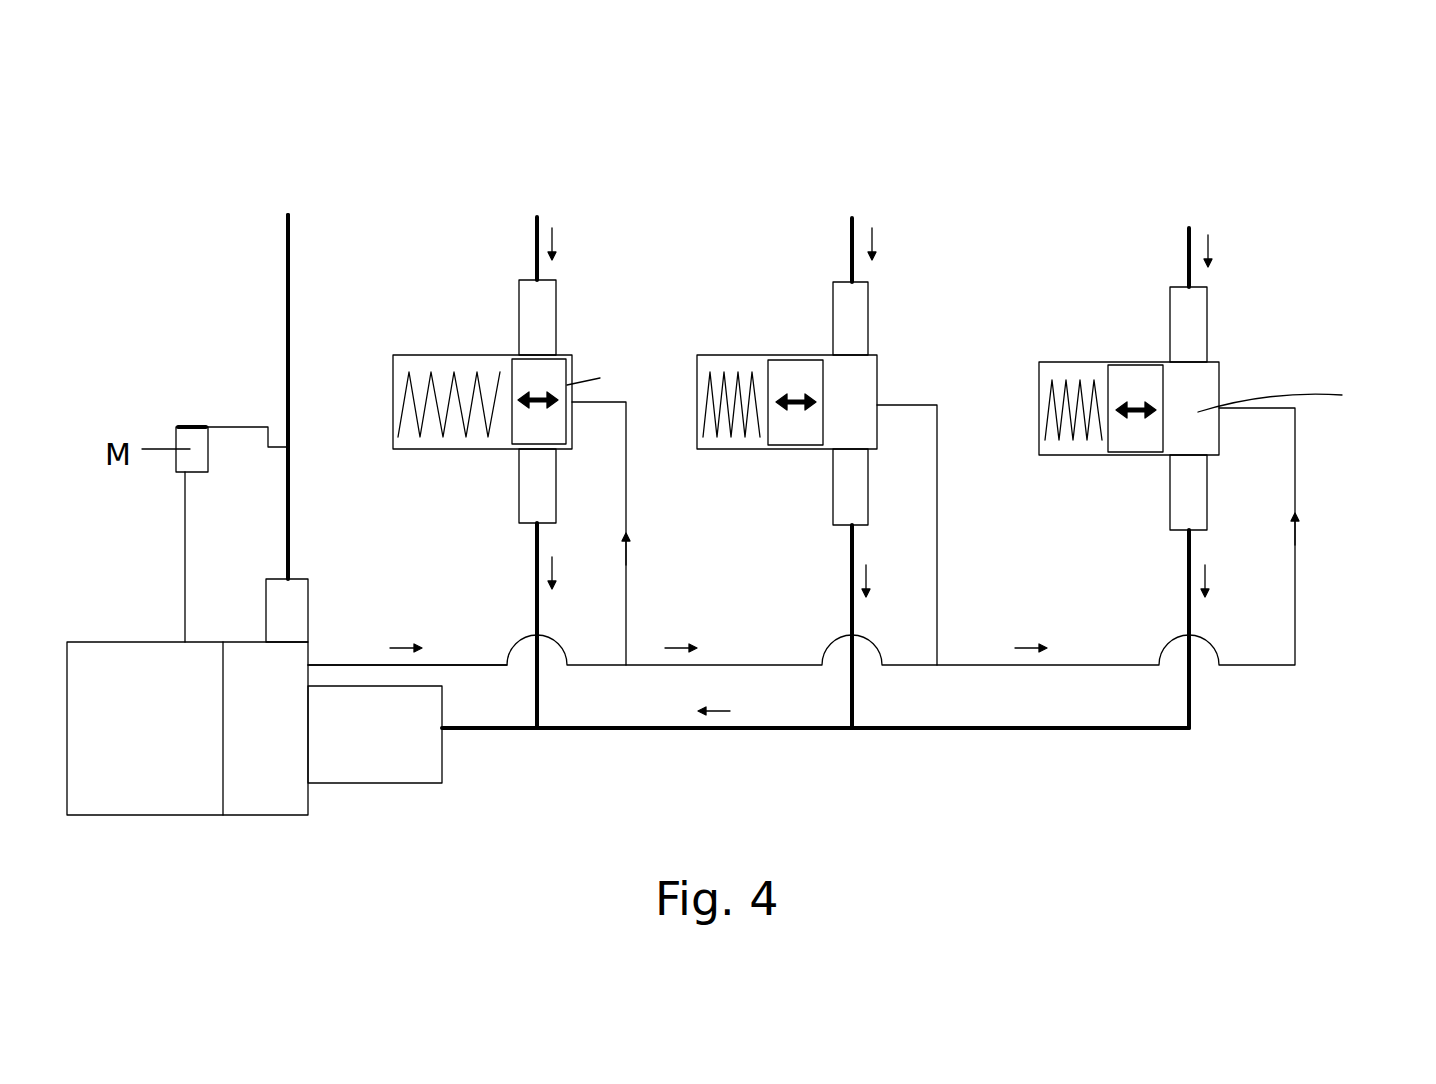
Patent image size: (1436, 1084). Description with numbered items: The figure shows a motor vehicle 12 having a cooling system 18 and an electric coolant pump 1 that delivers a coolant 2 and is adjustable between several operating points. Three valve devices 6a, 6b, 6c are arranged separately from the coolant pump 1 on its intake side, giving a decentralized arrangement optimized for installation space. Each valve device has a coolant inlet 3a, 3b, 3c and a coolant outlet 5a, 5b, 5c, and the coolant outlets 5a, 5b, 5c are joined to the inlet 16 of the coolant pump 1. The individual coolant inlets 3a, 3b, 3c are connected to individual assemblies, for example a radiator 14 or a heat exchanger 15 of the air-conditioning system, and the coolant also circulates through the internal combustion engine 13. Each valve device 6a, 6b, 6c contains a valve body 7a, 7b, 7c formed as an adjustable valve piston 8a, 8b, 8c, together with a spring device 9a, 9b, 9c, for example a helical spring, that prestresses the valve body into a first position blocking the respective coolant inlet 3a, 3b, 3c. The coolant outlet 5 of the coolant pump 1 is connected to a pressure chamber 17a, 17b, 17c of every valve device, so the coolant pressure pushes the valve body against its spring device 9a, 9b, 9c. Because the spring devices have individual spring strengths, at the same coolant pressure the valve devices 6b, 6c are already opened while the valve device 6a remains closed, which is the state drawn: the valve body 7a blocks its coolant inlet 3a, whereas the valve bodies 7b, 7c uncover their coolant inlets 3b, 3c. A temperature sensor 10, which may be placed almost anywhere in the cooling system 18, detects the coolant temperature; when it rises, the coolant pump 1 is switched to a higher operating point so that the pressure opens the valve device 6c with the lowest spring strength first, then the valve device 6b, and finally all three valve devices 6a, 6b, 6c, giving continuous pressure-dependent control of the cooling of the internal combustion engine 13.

The coolant pump 1 is at (158, 752).
The coolant 2 is at (305, 418).
The coolant inlet 3a is at (537, 268).
The coolant inlet 3b is at (850, 272).
The coolant inlet 3c is at (1180, 280).
The coolant outlet 5 is at (312, 657).
The coolant outlet 5a is at (532, 538).
The coolant outlet 5b is at (842, 530).
The coolant outlet 5c is at (1180, 540).
The valve device 6a is at (490, 322).
The valve device 6b is at (808, 324).
The valve device 6c is at (1135, 330).
The valve body 7a is at (542, 378).
The valve body 7b is at (790, 430).
The valve body 7c is at (1127, 438).
The valve piston 8a is at (612, 317).
The valve piston 8b is at (797, 454).
The valve piston 8c is at (1139, 459).
The spring device 9a is at (425, 385).
The spring device 9b is at (717, 423).
The spring device 9c is at (1065, 430).
The temperature sensor 10 is at (282, 420).
The motor vehicle 12 is at (325, 113).
The internal combustion engine 13 is at (1240, 216).
The radiator 14 is at (915, 162).
The heat exchanger 15 is at (1320, 211).
The inlet 16 is at (452, 748).
The pressure chamber 17a is at (567, 362).
The pressure chamber 17b is at (862, 373).
The pressure chamber 17c is at (1205, 385).
The cooling system 18 is at (243, 306).